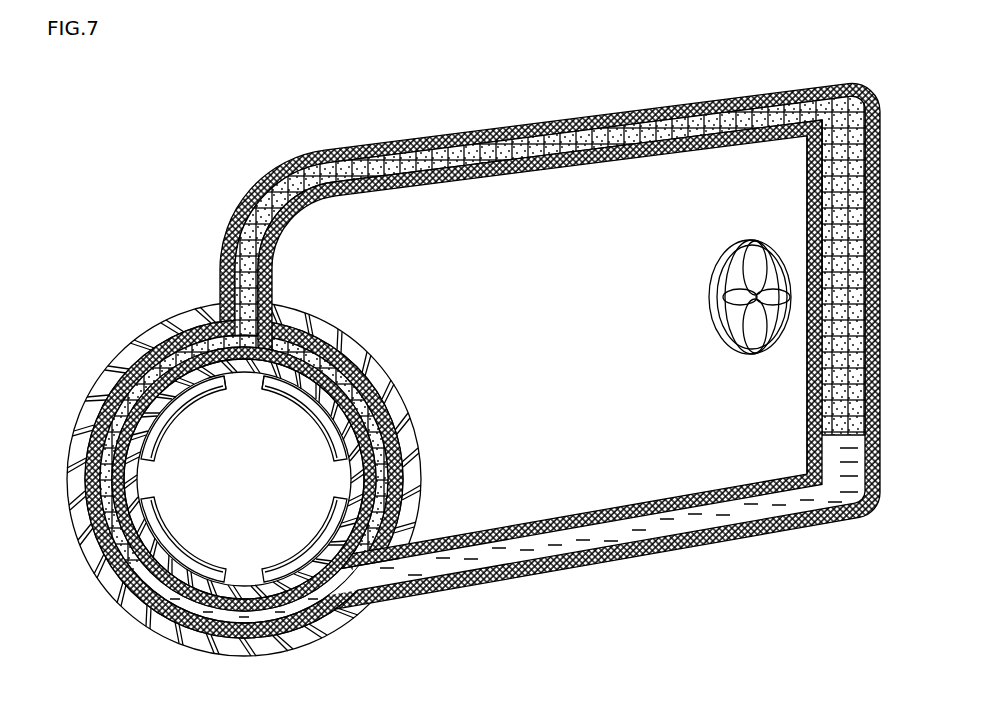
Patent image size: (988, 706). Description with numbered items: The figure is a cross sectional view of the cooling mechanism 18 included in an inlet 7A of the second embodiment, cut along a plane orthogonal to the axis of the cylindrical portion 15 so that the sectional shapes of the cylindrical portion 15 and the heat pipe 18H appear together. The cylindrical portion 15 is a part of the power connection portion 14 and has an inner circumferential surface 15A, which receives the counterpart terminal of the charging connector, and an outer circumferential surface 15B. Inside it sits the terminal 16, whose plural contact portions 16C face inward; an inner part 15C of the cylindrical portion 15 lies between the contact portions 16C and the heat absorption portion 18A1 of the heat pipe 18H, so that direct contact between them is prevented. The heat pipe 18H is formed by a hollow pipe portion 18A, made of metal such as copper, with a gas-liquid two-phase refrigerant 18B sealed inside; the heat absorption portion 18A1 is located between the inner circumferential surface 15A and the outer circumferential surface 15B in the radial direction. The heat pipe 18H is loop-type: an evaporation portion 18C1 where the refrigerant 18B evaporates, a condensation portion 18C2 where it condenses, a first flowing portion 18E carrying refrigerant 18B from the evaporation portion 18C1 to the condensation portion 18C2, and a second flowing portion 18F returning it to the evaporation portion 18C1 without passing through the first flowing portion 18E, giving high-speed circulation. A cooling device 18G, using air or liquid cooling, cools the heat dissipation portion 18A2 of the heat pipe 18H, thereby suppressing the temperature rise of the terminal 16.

The inlet 7A is at (143, 122).
The rotating body 14 is at (148, 292).
The cylindrical portion 15 is at (187, 302).
The inner circumferential surface 15A is at (243, 372).
The outer circumferential surface 15B is at (150, 325).
The inner part 15C is at (332, 523).
The terminal 16 is at (322, 506).
The contact portions 16C is at (322, 503).
The cooling mechanism 18 is at (550, 339).
The pipe portion 18A is at (543, 168).
The heat absorption portion 18A1 is at (340, 562).
The heat dissipation portion 18A2 is at (808, 326).
The refrigerant 18B is at (502, 145).
The evaporation portion 18C1 is at (385, 512).
The condensation portion 18C2 is at (843, 250).
The first flowing portion 18E is at (552, 145).
The second flowing portion 18F is at (599, 533).
The cooling device 18G is at (708, 297).
The heat pipe 18H is at (652, 316).